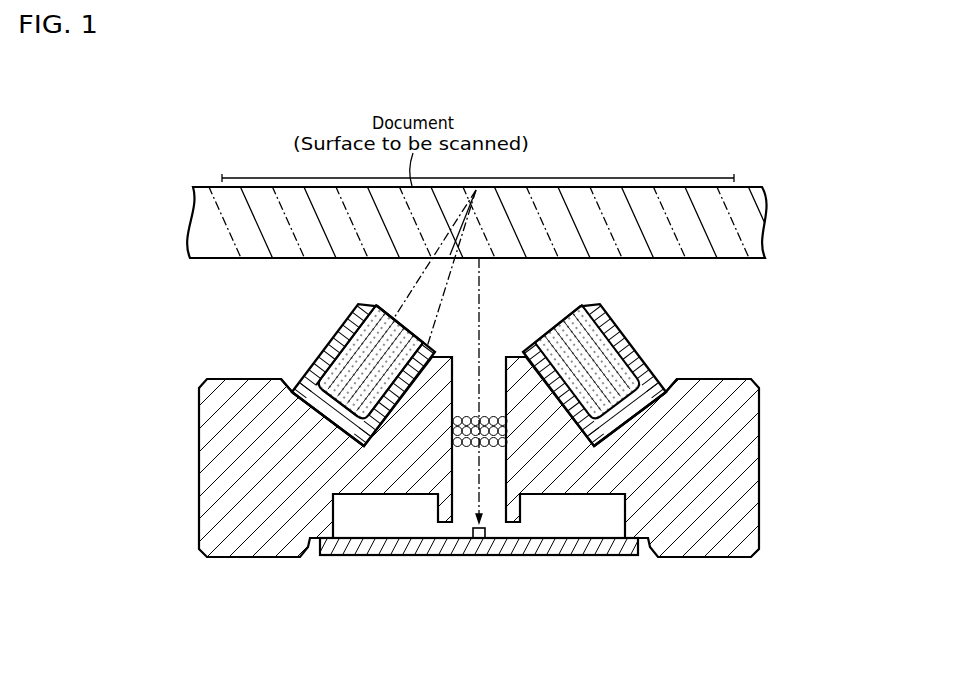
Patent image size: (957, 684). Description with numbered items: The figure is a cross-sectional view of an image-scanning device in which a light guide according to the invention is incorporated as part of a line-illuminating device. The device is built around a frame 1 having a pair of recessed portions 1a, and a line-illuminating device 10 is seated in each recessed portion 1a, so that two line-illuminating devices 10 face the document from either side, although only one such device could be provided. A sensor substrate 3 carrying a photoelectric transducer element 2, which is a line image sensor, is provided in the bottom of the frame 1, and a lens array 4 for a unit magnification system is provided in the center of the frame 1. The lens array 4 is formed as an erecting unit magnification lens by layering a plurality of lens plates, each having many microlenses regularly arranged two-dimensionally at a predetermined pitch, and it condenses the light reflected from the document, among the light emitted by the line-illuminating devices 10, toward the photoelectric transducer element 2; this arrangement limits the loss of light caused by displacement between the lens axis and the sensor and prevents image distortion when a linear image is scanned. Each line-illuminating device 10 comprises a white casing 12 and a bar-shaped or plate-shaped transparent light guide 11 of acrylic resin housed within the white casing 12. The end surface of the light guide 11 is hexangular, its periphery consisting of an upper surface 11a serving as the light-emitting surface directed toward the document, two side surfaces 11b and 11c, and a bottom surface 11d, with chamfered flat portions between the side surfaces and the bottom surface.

The frame 1 is at (740, 497).
The recessed portion 1a is at (310, 382).
The photoelectric transducer element 2 is at (487, 538).
The sensor substrate 3 is at (564, 550).
The lens array 4 is at (492, 417).
The line-illuminating device 10 is at (469, 375).
The light guide 11 is at (577, 343).
The upper surface 11a is at (398, 320).
The side surface 11b is at (353, 333).
The side surface 11c is at (402, 406).
The bottom surface 11d is at (320, 405).
The white casing 12 is at (622, 338).